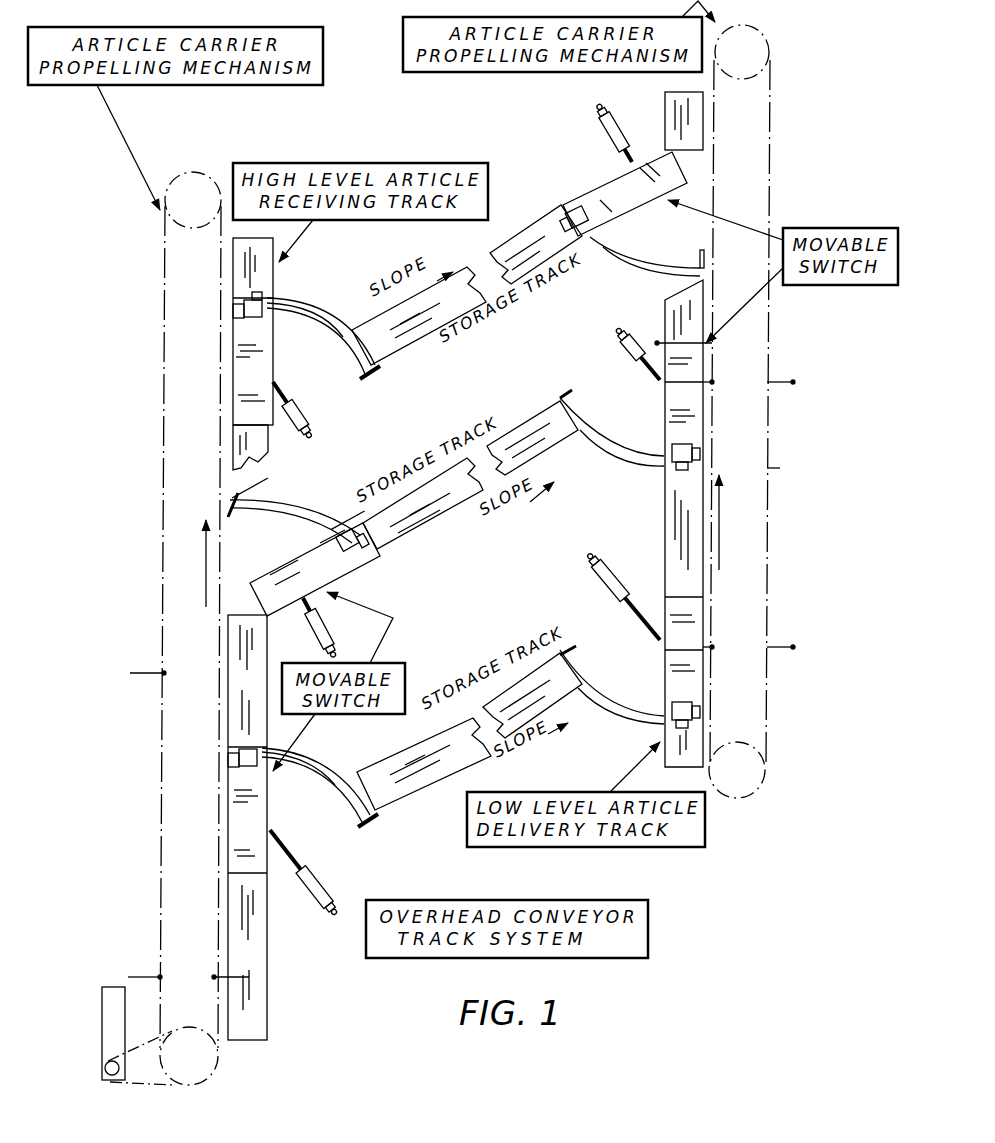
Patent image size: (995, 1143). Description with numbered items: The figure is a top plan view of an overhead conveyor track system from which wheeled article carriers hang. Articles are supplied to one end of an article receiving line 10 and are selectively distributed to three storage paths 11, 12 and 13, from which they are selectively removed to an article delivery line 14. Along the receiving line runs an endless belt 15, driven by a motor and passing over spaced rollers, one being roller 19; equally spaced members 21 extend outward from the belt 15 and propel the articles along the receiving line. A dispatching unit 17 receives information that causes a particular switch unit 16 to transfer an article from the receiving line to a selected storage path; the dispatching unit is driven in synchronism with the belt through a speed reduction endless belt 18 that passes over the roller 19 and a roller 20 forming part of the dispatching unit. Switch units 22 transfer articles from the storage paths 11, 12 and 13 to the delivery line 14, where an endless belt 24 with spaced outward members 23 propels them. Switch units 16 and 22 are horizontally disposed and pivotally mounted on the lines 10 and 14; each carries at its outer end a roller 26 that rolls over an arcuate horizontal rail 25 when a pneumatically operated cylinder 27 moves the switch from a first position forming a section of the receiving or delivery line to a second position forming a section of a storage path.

The article receiving line 10 is at (267, 957).
The storage path 11 is at (436, 767).
The storage path 12 is at (440, 513).
The storage path 13 is at (413, 338).
The article delivery line 14 is at (664, 544).
The endless belt 15 is at (160, 826).
The switch unit 16 is at (274, 358).
The dispatching unit 17 is at (103, 992).
The endless belt 18 is at (165, 1082).
The roller 19 is at (206, 1073).
The roller 20 is at (112, 1080).
The member 21 is at (154, 673).
The switch unit 22 is at (612, 183).
The member 23 is at (770, 382).
The endless belt 24 is at (768, 468).
The rail 25 is at (338, 318).
The roller 26 is at (275, 298).
The pneumatically operated cylinder 27 is at (318, 424).